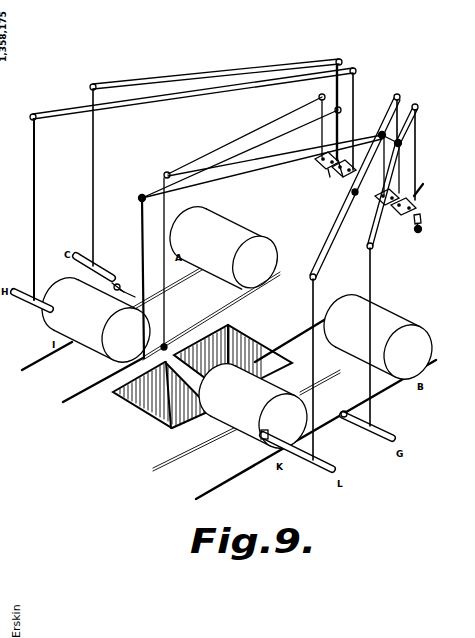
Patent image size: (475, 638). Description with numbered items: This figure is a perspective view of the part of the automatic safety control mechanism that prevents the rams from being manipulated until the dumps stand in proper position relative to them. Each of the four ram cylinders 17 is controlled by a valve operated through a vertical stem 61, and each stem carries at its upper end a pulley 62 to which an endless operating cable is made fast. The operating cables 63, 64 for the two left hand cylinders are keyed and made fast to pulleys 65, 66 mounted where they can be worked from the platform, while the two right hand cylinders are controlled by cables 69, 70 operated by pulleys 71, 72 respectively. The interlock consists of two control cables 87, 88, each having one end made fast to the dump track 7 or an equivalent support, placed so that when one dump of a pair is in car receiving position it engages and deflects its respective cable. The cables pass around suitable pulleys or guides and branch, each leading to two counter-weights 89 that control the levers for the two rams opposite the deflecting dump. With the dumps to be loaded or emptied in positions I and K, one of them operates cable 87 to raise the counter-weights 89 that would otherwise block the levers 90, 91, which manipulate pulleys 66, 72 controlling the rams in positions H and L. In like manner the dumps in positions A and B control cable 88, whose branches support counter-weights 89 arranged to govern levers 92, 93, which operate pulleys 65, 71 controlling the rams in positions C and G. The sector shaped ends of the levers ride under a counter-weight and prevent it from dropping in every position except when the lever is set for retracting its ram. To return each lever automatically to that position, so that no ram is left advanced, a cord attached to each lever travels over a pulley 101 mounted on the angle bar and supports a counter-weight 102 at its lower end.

The dump track 7 is at (186, 328).
The ram cylinder 17 is at (85, 270).
The vertical stem 61 is at (91, 186).
The pulley 62 is at (89, 88).
The operating cable 63 is at (203, 75).
The operating cable 64 is at (228, 85).
The pulley 65 is at (341, 62).
The pulley 66 is at (356, 70).
The cable 69 is at (371, 244).
The cable 70 is at (337, 227).
The pulley 71 is at (419, 108).
The pulley 72 is at (400, 98).
The control cable 87 is at (142, 250).
The control cable 88 is at (262, 223).
The counter-weight 89 is at (317, 170).
The lever 90 is at (358, 146).
The lever 91 is at (413, 187).
The lever 92 is at (349, 133).
The lever 93 is at (424, 199).
The pulley 101 is at (423, 220).
The counter-weight 102 is at (424, 230).